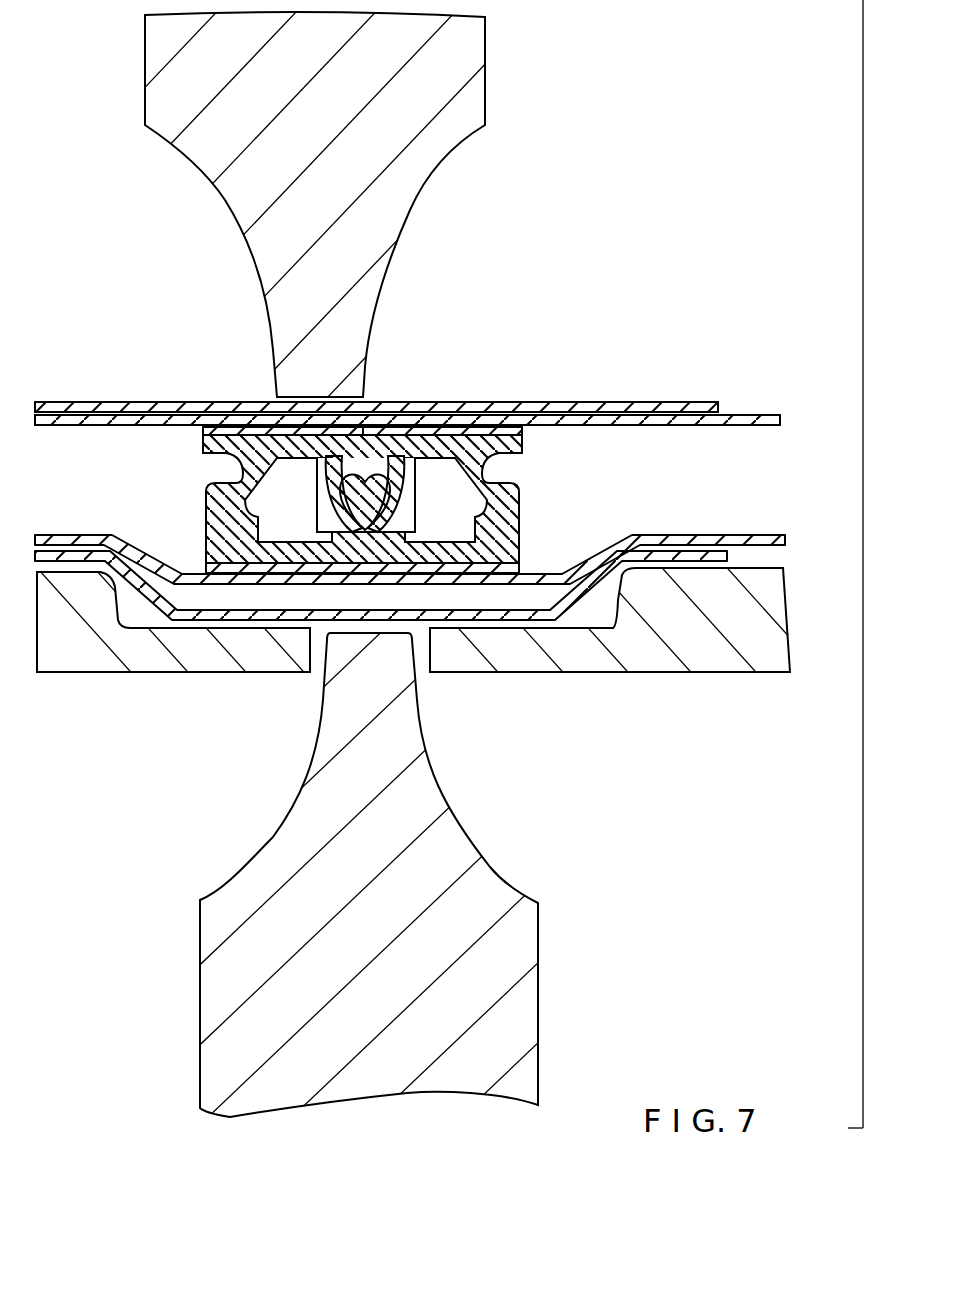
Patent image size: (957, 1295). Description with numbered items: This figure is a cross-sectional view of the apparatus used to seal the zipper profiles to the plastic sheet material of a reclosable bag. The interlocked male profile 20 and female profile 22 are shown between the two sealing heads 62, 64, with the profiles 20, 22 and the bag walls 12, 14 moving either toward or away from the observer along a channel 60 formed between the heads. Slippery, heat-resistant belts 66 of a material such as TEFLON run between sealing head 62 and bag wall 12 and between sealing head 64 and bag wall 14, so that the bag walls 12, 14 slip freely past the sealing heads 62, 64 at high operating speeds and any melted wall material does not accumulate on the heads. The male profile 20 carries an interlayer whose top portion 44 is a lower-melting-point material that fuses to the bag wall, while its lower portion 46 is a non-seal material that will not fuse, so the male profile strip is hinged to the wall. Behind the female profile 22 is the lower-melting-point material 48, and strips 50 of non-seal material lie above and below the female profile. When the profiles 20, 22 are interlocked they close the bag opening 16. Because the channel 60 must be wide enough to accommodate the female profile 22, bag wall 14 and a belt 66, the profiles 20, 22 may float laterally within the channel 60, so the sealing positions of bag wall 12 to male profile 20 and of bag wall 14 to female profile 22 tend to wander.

The front wall 12 is at (778, 425).
The rear wall 14 is at (785, 538).
The bag opening 16 is at (138, 487).
The male profile 20 is at (483, 463).
The female profile 22 is at (513, 507).
The top portion of the interlayer 44 is at (204, 431).
The lower portion of the interlayer 46 is at (521, 433).
The lower-melting-point material 48 is at (387, 573).
The strips of non-seal material 50 is at (205, 568).
The channel 60 is at (593, 613).
The sealing head 62 is at (462, 73).
The sealing head 64 is at (508, 1047).
The belts 66 is at (712, 400).